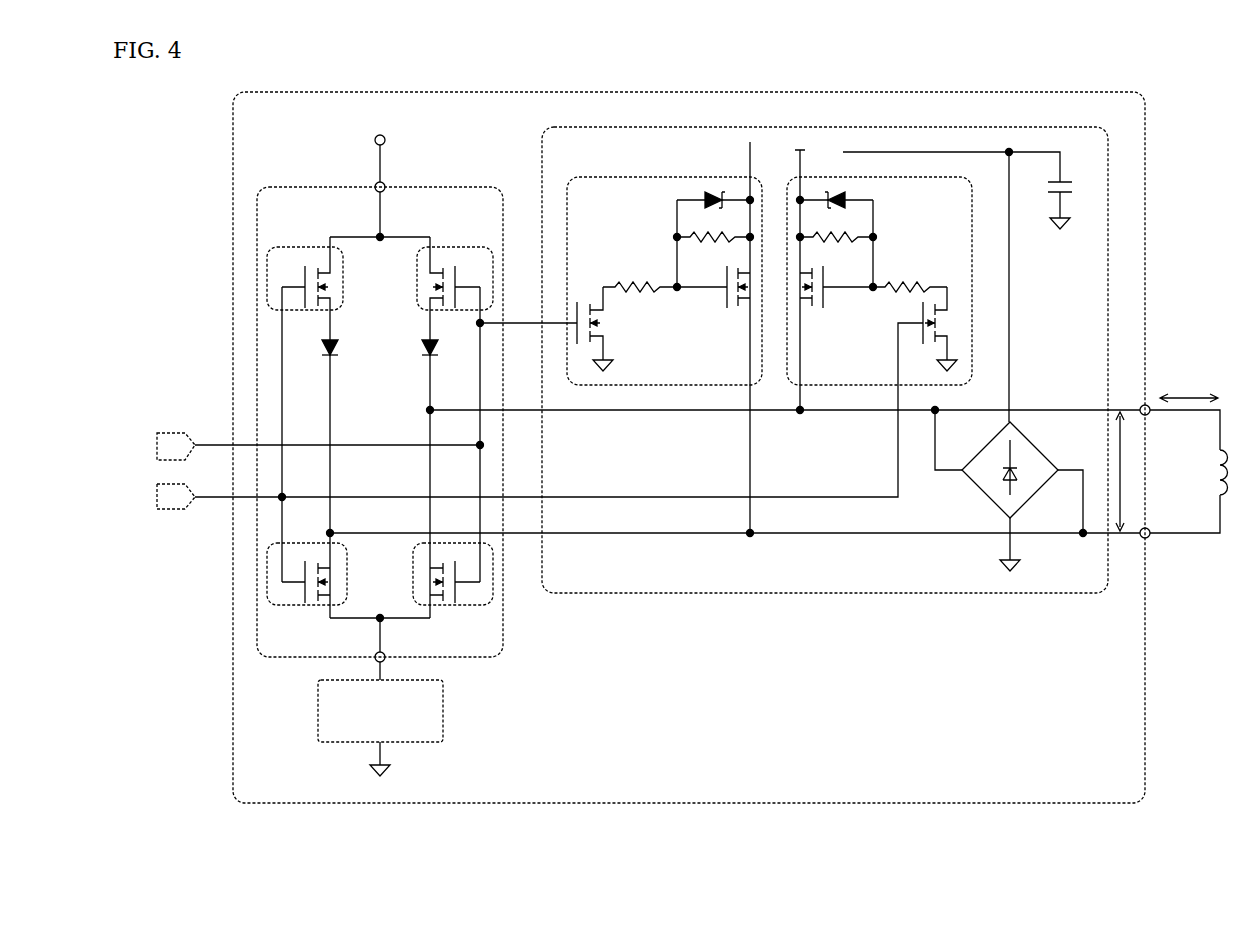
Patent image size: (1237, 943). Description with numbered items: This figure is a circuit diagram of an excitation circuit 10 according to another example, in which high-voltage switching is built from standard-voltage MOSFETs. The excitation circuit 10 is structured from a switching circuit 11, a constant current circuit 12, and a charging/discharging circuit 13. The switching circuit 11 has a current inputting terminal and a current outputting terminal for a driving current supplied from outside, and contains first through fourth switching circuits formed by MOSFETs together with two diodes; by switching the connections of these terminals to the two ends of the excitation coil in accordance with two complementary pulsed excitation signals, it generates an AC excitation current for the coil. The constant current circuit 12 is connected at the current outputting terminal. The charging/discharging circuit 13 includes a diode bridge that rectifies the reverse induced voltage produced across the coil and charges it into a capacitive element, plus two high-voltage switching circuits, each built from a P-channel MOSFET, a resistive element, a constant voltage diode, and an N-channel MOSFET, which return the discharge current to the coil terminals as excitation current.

The excitation circuit 10 is at (283, 92).
The switching circuit 11 is at (310, 187).
The constant current circuit 12 is at (446, 701).
The charging/discharging circuit 13 is at (598, 127).